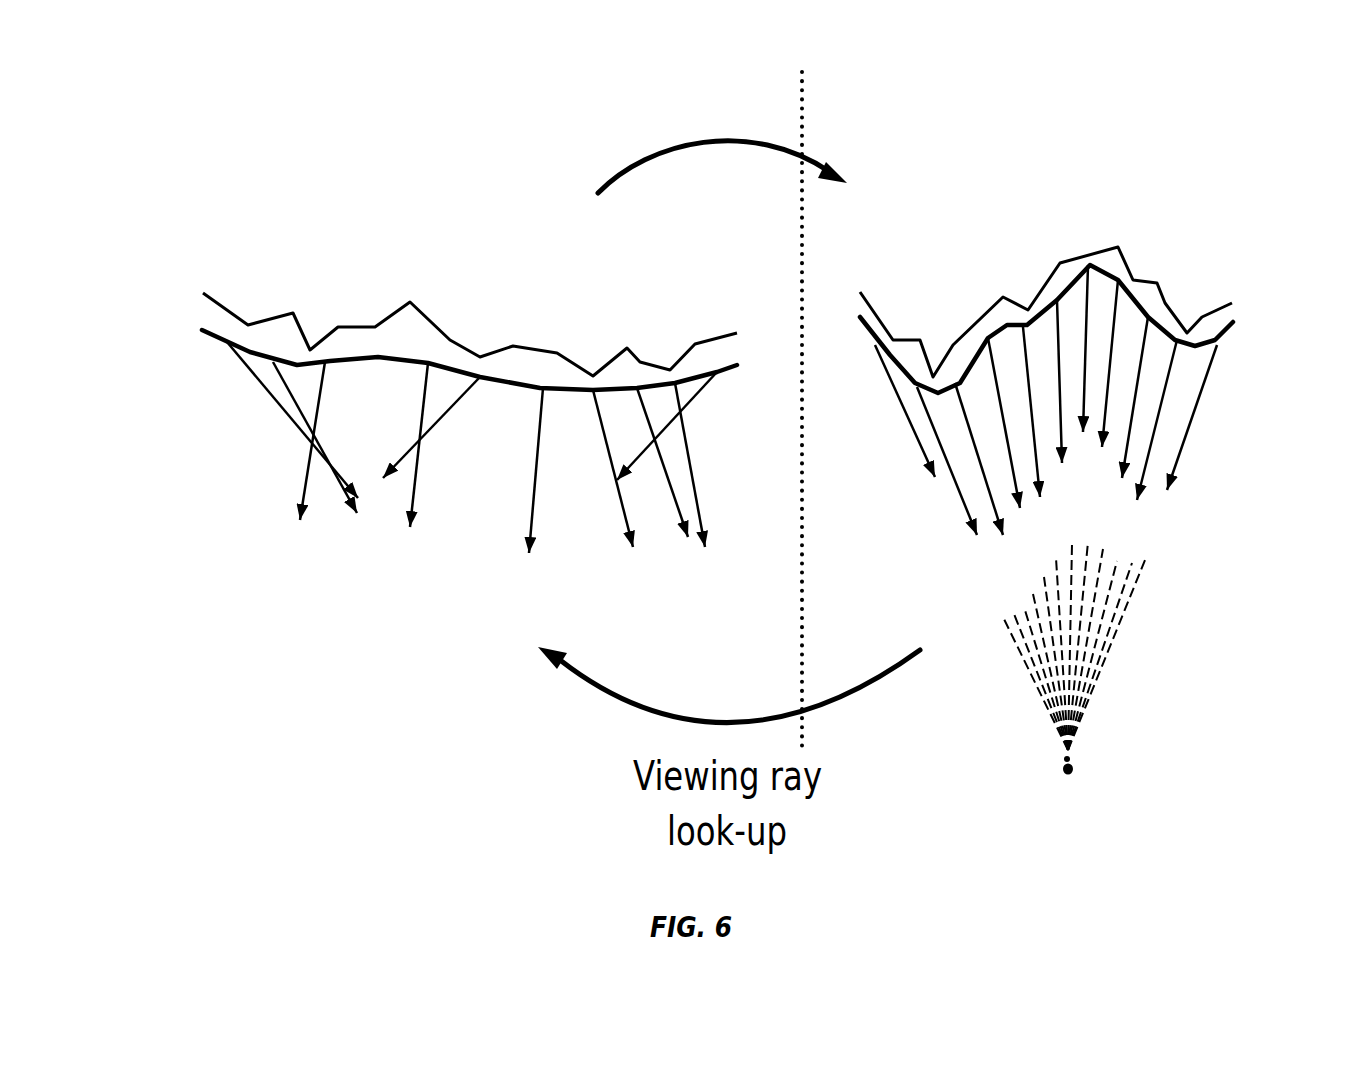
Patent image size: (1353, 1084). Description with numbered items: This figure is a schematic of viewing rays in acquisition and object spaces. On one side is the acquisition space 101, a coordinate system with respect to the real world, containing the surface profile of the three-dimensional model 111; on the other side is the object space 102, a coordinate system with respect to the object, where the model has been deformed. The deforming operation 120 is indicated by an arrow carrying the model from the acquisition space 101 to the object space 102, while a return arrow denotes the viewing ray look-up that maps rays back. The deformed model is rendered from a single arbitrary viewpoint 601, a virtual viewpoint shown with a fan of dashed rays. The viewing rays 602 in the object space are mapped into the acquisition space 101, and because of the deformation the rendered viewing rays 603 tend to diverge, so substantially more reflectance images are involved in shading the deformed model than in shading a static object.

The acquisition space 101 is at (437, 95).
The object space 102 is at (1038, 100).
The 3D model 111 is at (170, 312).
The deforming 120 is at (692, 132).
The viewpoint 601 is at (1073, 815).
The viewing rays 602 is at (533, 472).
The rendered viewing rays 603 is at (953, 483).